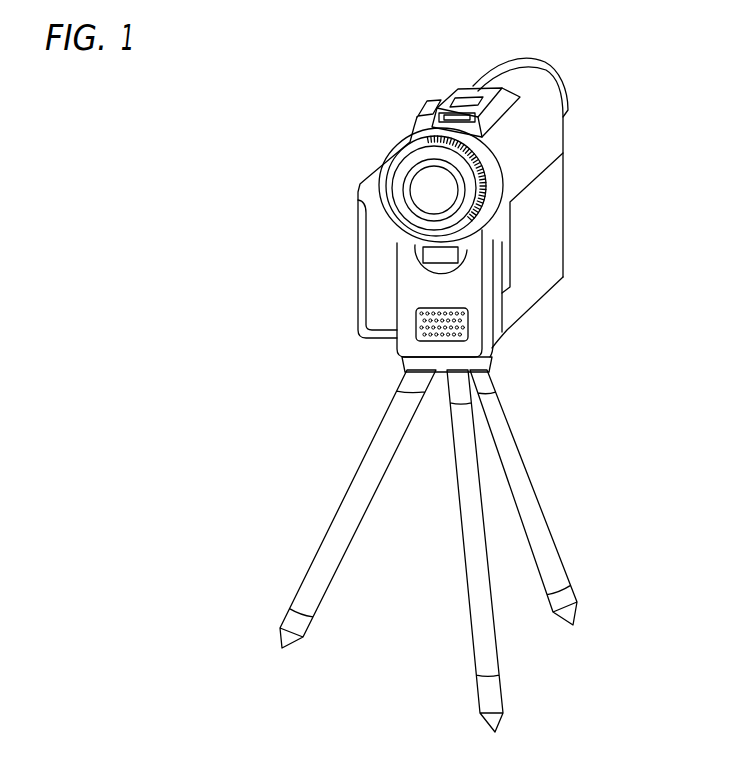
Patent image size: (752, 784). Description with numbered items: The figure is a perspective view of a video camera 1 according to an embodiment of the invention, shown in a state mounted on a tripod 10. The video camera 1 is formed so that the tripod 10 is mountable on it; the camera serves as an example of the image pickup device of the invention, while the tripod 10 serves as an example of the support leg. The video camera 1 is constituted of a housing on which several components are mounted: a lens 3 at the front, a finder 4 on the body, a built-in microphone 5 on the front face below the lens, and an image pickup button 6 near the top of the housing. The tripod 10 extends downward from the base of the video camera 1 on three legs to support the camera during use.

The video camera 1 is at (456, 188).
The lens 3 is at (428, 196).
The finder 4 is at (548, 69).
The built-in microphone 5 is at (413, 315).
The image pickup button 6 is at (423, 108).
The tripod 10 is at (518, 485).